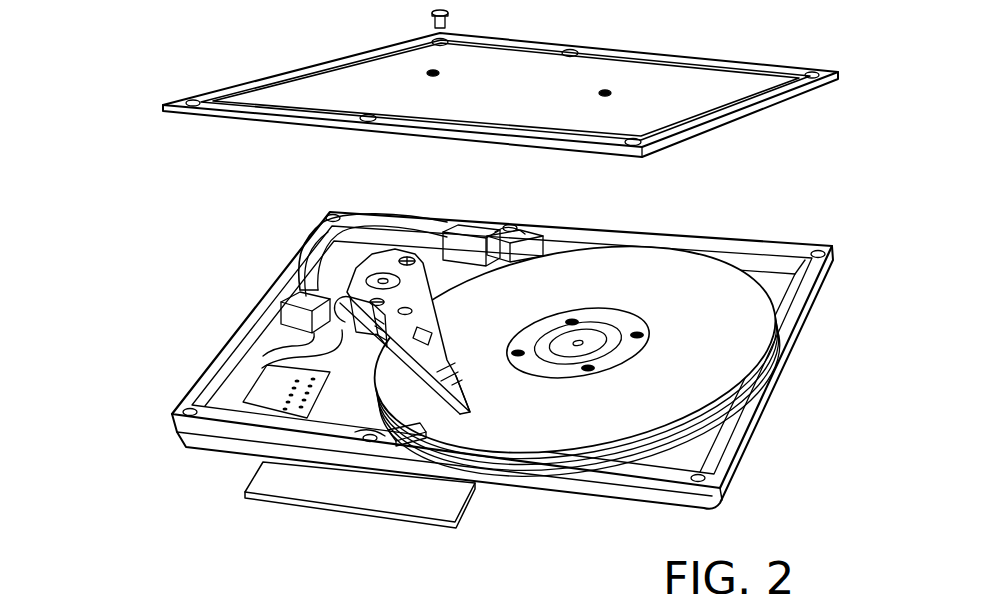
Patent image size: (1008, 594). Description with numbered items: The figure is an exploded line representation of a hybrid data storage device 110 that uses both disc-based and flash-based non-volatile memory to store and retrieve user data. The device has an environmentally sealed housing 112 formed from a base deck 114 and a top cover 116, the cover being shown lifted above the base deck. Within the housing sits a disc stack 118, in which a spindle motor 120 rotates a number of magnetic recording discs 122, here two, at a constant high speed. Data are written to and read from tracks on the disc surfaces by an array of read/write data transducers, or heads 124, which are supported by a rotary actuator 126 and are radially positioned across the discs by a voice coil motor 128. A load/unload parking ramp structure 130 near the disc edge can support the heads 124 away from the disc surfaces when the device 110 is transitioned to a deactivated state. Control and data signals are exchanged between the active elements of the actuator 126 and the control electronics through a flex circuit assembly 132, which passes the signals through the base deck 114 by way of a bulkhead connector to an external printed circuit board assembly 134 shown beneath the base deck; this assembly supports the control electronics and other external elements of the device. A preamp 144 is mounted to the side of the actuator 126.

The data storage device 110 is at (145, 70).
The housing 112 is at (200, 212).
The base deck 114 is at (767, 402).
The top cover 116 is at (600, 66).
The disc stack 118 is at (620, 245).
The spindle motor 120 is at (590, 335).
The magnetic recording discs 122 is at (573, 457).
The read/write data transducers (heads) 124 is at (476, 403).
The rotary actuator 126 is at (450, 337).
The voice coil motor 128 is at (377, 225).
The load/unload parking ramp structure 130 is at (412, 440).
The flex circuit assembly 132 is at (290, 345).
The printed circuit board assembly (PCBA) 134 is at (295, 490).
The preamp 144 is at (330, 303).